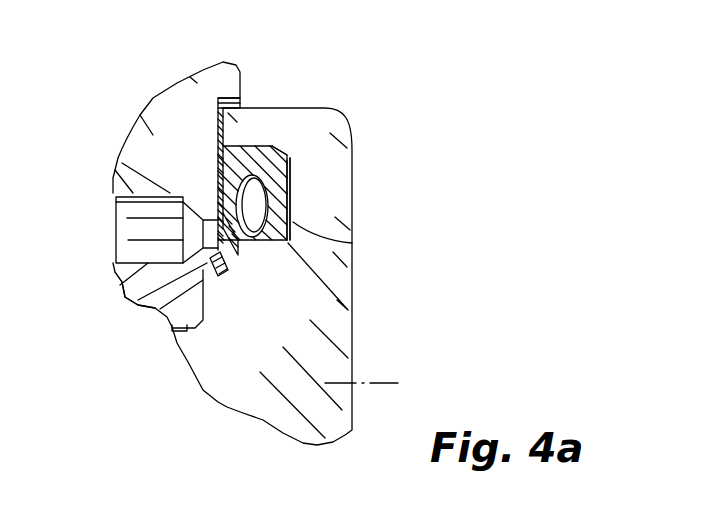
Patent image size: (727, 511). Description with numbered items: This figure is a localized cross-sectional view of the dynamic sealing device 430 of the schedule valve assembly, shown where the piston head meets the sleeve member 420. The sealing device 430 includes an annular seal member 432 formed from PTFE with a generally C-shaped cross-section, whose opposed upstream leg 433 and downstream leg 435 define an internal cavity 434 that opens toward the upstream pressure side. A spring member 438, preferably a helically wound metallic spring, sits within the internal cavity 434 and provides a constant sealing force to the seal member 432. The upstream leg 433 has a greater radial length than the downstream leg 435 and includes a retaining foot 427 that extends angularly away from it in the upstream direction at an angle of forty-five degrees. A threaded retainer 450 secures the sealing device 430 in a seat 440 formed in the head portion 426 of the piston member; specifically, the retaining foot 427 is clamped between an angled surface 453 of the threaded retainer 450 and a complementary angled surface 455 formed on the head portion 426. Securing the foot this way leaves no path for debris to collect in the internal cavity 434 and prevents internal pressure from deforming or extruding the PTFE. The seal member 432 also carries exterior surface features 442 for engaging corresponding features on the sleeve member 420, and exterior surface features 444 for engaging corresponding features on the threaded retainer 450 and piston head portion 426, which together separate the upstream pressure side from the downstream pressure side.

The sleeve member 420 is at (206, 70).
The head portion 426 is at (138, 282).
The retaining foot 427 is at (206, 300).
The dynamic sealing device 430 is at (297, 155).
The annular seal member 432 is at (248, 146).
The upstream leg 433 is at (218, 215).
The internal cavity 434 is at (243, 242).
The downstream leg 435 is at (289, 199).
The spring member 438 is at (278, 146).
The seat 440 is at (292, 184).
The exterior surface features 442 is at (199, 216).
The exterior surface features 444 is at (352, 243).
The threaded retainer 450 is at (240, 397).
The angled surface 453 is at (226, 292).
The angled surface 455 is at (140, 300).